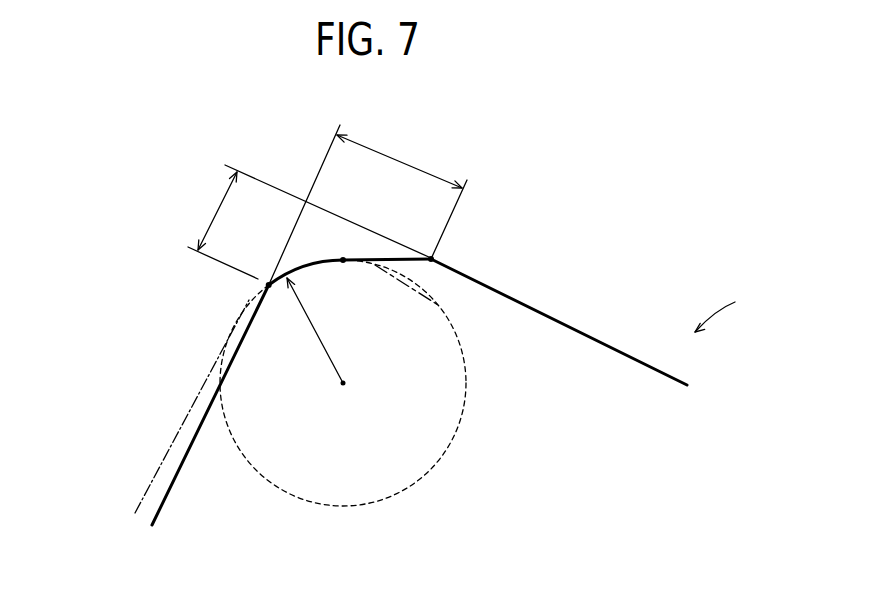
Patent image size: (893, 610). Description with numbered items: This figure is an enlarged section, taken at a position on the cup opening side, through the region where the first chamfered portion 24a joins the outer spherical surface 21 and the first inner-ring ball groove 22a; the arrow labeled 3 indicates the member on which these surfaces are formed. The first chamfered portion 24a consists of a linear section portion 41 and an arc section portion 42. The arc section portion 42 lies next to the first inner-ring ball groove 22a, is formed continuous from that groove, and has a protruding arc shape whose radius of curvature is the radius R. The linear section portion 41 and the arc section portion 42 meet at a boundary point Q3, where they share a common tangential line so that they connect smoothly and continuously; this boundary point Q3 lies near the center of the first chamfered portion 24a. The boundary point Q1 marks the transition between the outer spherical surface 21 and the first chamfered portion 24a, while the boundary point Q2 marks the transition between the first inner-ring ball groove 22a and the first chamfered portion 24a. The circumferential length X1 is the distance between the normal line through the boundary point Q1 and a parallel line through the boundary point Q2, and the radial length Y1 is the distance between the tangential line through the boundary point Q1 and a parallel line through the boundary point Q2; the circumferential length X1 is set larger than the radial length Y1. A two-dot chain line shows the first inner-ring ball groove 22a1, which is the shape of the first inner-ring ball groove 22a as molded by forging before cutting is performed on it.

The member (work piece) 3 is at (725, 310).
The outer spherical surface 21 is at (615, 342).
The first inner-ring ball groove 22a is at (207, 420).
The first inner-ring ball groove (as forged) 22a1 is at (155, 475).
The first chamfered portion 24a is at (458, 228).
The linear section portion 41 is at (393, 258).
The arc section portion 42 is at (302, 266).
The boundary point Q1 is at (432, 262).
The boundary point Q2 is at (270, 288).
The boundary point Q3 is at (344, 263).
The radius R is at (315, 330).
The circumferential length X1 is at (368, 205).
The radial length Y1 is at (304, 222).